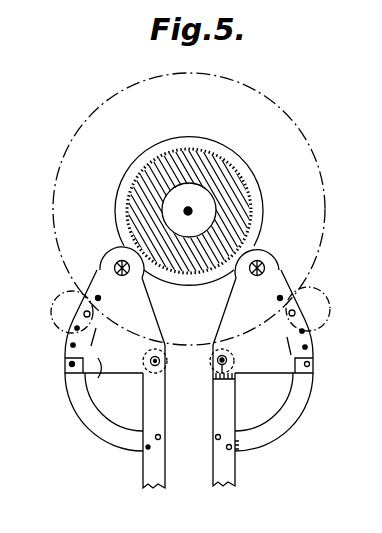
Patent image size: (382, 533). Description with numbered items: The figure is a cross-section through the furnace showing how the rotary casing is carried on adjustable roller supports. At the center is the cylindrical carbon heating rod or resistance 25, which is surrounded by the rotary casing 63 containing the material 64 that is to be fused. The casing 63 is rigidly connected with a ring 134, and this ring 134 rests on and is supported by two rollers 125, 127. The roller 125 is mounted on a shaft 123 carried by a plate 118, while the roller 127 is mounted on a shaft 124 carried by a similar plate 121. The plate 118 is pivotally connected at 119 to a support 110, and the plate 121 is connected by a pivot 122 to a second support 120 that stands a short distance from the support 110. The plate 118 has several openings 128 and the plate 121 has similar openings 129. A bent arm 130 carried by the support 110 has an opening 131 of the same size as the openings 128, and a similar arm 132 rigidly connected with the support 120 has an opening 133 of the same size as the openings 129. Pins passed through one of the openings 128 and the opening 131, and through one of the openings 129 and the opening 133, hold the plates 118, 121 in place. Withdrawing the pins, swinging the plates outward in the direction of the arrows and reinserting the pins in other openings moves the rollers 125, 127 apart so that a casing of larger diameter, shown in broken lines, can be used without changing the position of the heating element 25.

The heating rod or resistance 25 is at (185, 210).
The rotary casing 63 is at (243, 182).
The material 64 is at (217, 163).
The support 110 is at (228, 465).
The plate 118 is at (273, 333).
The pivot 119 is at (218, 366).
The support 120 is at (143, 481).
The plate 121 is at (113, 375).
The pivot 122 is at (161, 361).
The shaft 123 is at (264, 268).
The shaft 124 is at (113, 265).
The roller 125 is at (268, 251).
The roller 127 is at (111, 247).
The openings 128 is at (308, 346).
The openings 129 is at (76, 345).
The bent arm 130 is at (294, 405).
The opening 131 is at (314, 364).
The arm 132 is at (95, 419).
The opening 133 is at (66, 365).
The ring 134 is at (259, 197).